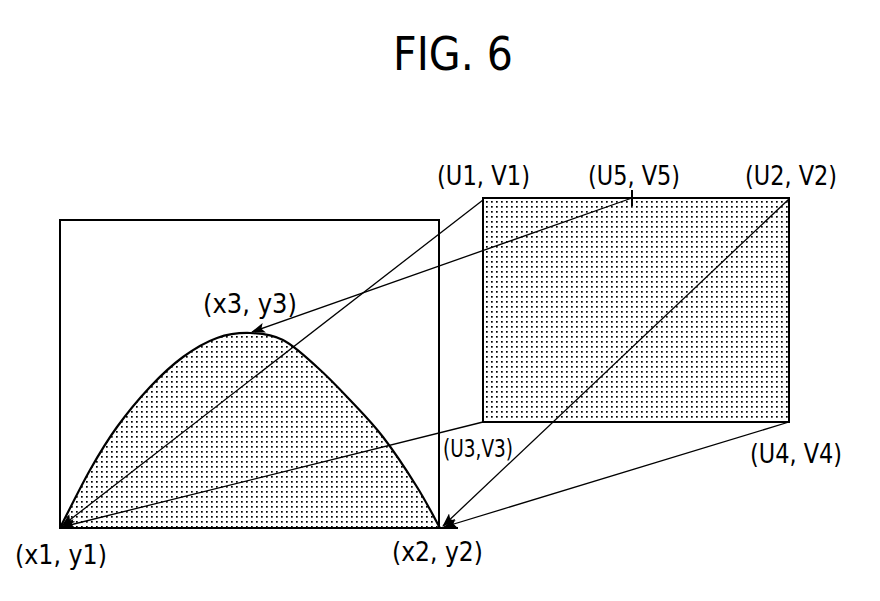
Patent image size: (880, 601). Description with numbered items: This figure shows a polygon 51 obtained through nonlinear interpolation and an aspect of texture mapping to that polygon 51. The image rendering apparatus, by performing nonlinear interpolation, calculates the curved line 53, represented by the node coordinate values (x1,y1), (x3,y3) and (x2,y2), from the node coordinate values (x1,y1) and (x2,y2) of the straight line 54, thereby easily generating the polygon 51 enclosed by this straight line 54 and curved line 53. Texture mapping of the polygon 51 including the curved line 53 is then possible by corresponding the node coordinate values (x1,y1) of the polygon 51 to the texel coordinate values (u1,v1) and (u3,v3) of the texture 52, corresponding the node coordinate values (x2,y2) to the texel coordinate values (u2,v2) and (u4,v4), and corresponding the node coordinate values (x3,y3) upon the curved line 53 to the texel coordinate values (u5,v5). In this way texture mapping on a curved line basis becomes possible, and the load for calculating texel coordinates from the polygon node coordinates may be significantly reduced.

The polygon 51 is at (317, 520).
The texture 52 is at (711, 197).
The curved line 53 is at (146, 391).
The straight line 54 is at (203, 532).